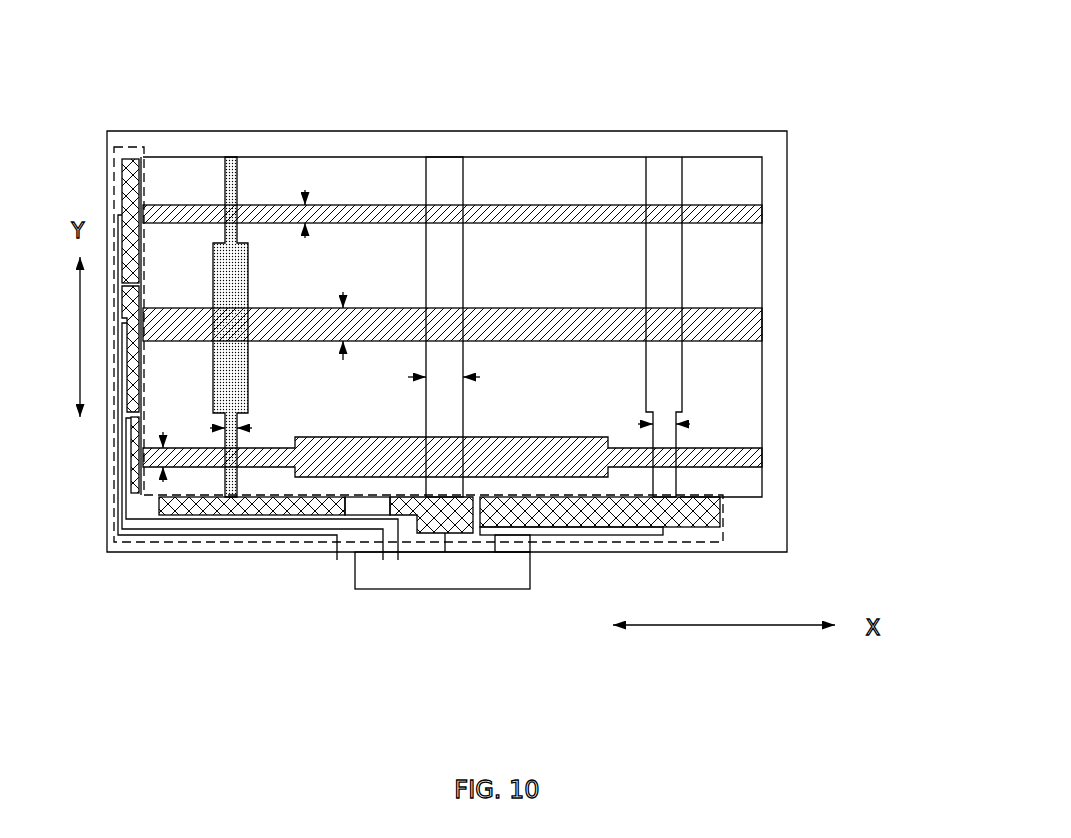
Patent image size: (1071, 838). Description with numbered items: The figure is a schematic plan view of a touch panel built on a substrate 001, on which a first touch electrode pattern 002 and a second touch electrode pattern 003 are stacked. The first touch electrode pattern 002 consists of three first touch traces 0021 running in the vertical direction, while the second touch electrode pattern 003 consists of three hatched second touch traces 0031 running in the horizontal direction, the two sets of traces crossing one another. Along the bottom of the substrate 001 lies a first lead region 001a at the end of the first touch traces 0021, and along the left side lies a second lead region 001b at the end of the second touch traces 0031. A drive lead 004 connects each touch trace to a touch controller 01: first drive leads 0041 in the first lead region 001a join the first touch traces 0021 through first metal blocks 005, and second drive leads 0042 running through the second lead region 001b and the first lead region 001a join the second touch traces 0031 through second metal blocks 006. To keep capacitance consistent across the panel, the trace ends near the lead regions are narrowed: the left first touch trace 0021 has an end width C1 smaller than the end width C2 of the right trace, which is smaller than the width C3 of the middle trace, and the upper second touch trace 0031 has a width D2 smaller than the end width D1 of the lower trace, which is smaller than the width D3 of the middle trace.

The substrate 001 is at (489, 399).
The first lead region 001a is at (227, 542).
The second lead region 001b is at (125, 542).
The first touch electrode pattern 002 is at (447, 251).
The first touch trace 0021 is at (233, 185).
The second touch electrode pattern 003 is at (548, 341).
The second touch trace 0031 is at (882, 400).
The drive lead 004 is at (324, 460).
The first drive lead 0041 is at (522, 537).
The second drive lead 0042 is at (358, 525).
The first metal block 005 is at (622, 512).
The second metal block 006 is at (122, 182).
The touch controller 01 is at (507, 565).
The width of end portion of lower second touch trace D1 is at (165, 441).
The width of upper second touch trace D2 is at (310, 199).
The width of middle second touch trace D3 is at (347, 314).
The width of end portion of left first touch trace C1 is at (247, 428).
The width of end portion of right first touch trace C2 is at (683, 424).
The width of middle first touch trace C3 is at (460, 378).